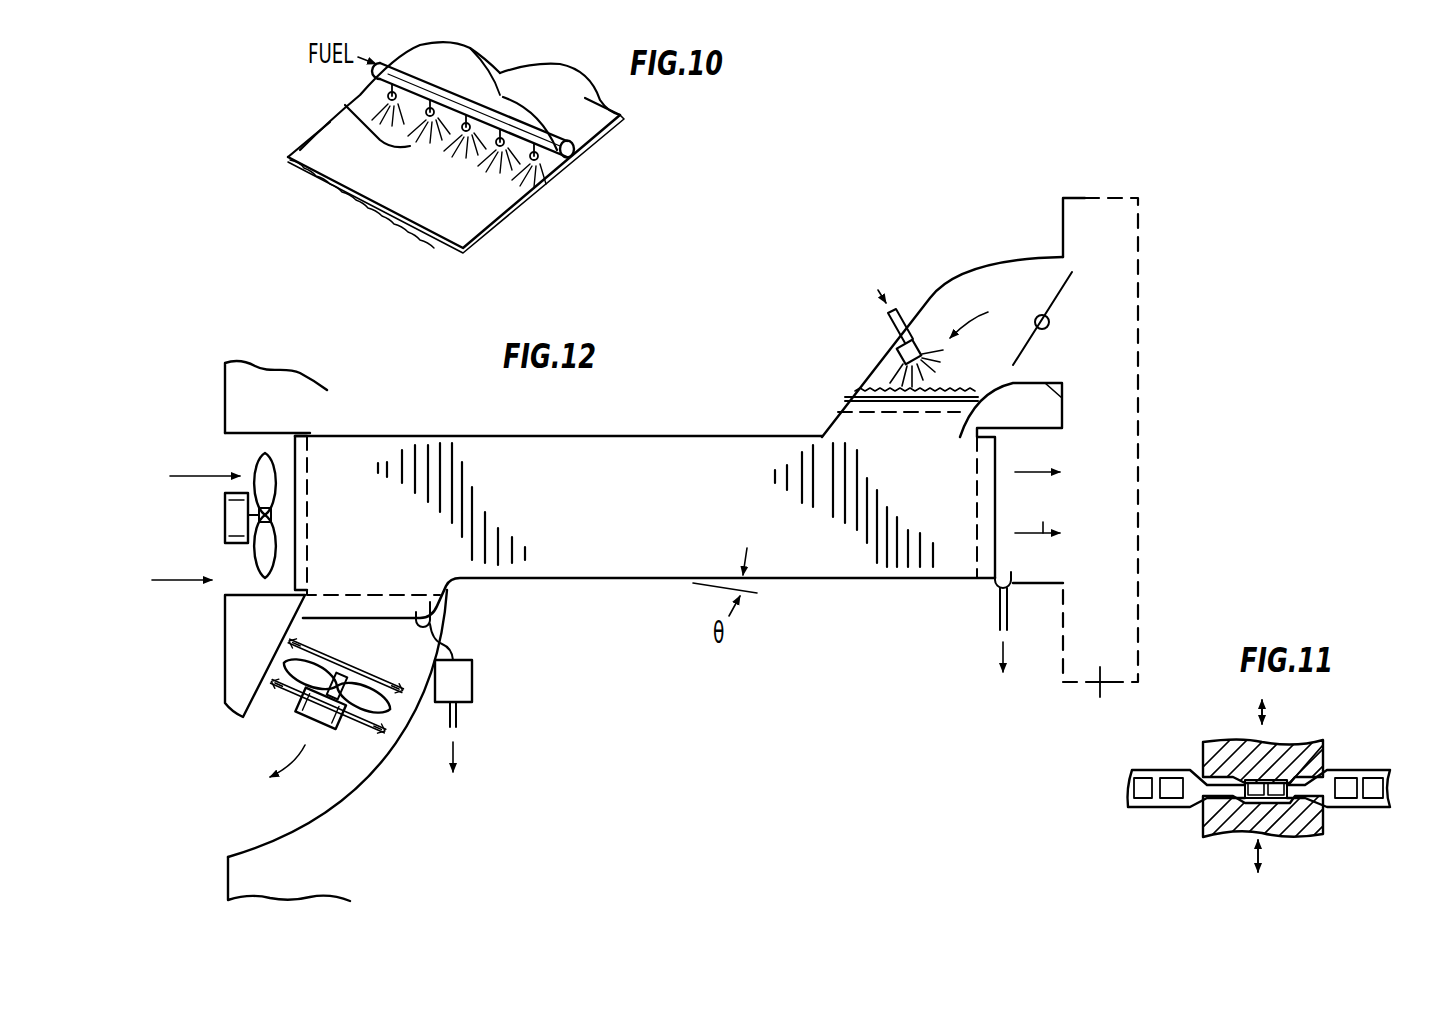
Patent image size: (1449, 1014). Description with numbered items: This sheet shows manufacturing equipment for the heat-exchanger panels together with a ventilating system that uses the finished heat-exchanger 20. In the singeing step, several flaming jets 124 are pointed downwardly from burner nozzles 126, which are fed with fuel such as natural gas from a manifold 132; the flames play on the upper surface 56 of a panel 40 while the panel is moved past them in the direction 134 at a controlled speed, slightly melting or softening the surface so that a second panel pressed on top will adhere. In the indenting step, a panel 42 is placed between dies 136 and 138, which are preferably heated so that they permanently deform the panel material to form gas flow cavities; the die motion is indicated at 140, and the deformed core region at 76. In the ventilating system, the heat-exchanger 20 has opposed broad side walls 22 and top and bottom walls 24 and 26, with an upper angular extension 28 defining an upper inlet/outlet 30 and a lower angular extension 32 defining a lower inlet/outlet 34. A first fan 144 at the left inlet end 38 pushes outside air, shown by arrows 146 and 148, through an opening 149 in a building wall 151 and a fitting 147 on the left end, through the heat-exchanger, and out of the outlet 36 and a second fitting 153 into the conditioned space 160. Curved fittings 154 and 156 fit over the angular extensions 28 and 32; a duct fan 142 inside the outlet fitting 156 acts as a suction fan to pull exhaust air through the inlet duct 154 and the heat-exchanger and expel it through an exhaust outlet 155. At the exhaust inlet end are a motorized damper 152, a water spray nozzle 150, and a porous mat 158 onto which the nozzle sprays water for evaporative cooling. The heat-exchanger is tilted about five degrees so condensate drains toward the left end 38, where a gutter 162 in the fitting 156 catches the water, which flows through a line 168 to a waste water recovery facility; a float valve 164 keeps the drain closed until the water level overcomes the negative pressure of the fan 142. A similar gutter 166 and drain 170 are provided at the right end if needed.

In FIG. 12, the heat-exchanger 20 is at (601, 590).
In FIG. 12, the broad side walls 22 is at (635, 534).
In FIG. 12, the top wall 24 is at (583, 436).
In FIG. 12, the bottom wall 26 is at (855, 580).
In FIG. 12, the upper angular extension 28 is at (823, 430).
In FIG. 12, the upper inlet/outlet 30 is at (896, 400).
In FIG. 12, the lower angular extension 32 is at (448, 588).
In FIG. 12, the lower inlet/outlet 34 is at (318, 620).
In FIG. 12, the outlet 36 is at (995, 550).
In FIG. 12, the left inlet end 38 is at (295, 477).
In FIG. 10, the panel 40 is at (495, 238).
In FIG. 11, the panel 42 is at (1116, 785).
In FIG. 10, the upper surface 56 is at (467, 209).
In FIG. 11, the crushed panel core 76 is at (1316, 748).
In FIG. 10, the flaming jets 124 is at (345, 120).
In FIG. 10, the burner nozzles 126 is at (440, 62).
In FIG. 10, the manifold 132 is at (607, 138).
In FIG. 10, the direction 134 is at (298, 128).
In FIG. 11, the die 136 is at (1281, 740).
In FIG. 11, the die 138 is at (1297, 835).
In FIG. 11, the die motion 140 is at (1258, 712).
In FIG. 12, the duct fan 142 is at (353, 730).
In FIG. 12, the first fan 144 is at (272, 557).
In FIG. 12, the arrows 146 is at (227, 474).
In FIG. 12, the fitting 147 is at (265, 433).
In FIG. 12, the arrows 148 is at (1042, 486).
In FIG. 12, the opening 149 is at (228, 597).
In FIG. 12, the water spray nozzle 150 is at (895, 355).
In FIG. 12, the wall 151 is at (225, 400).
In FIG. 12, the motorized damper 152 is at (1058, 303).
In FIG. 12, the fitting 153 is at (1045, 583).
In FIG. 12, the curved fitting 154 is at (1010, 255).
In FIG. 12, the exhaust outlet 155 is at (227, 861).
In FIG. 12, the curved fitting 156 is at (225, 705).
In FIG. 12, the porous mat 158 is at (956, 392).
In FIG. 12, the conditioned space 160 is at (1100, 692).
In FIG. 12, the gutter 162 is at (422, 636).
In FIG. 12, the float valve 164 is at (473, 665).
In FIG. 12, the gutter 166 is at (1011, 588).
In FIG. 12, the line 168 is at (460, 715).
In FIG. 12, the drain 170 is at (999, 613).